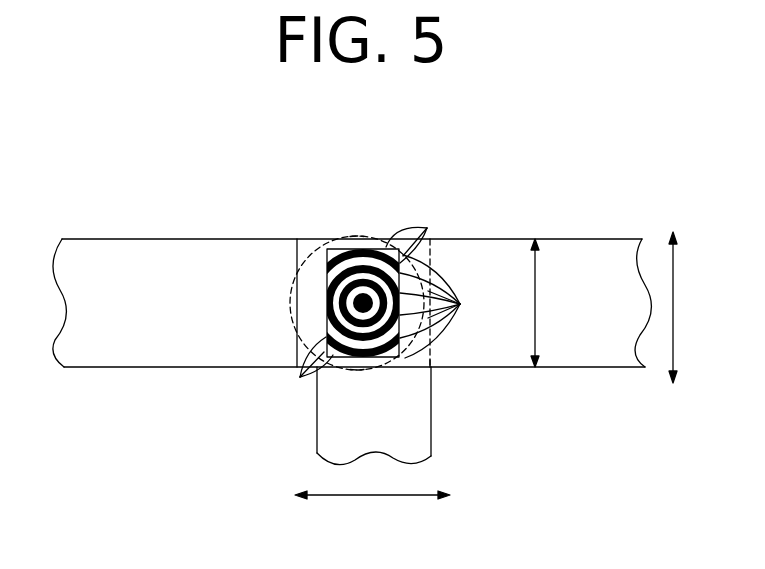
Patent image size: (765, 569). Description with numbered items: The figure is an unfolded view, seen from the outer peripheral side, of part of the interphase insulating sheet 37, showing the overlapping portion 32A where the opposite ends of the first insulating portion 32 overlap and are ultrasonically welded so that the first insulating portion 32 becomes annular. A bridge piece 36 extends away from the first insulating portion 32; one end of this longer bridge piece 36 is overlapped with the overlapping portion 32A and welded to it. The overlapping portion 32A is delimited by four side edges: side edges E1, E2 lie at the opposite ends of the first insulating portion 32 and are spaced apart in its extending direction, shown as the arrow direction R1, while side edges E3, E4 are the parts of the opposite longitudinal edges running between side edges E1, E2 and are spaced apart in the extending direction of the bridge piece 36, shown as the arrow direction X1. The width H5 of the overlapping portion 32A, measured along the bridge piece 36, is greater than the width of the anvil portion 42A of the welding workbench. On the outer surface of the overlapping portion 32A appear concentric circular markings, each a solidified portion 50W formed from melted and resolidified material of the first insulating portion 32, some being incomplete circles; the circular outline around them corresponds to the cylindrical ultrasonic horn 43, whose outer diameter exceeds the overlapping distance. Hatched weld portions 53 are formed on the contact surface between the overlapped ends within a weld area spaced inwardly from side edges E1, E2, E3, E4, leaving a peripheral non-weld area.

The first insulating portion 32 is at (171, 247).
The overlapping portion 32A is at (418, 363).
The bridge piece 36 is at (432, 432).
The interphase insulating sheet 37 is at (541, 219).
The anvil portion 42A is at (326, 330).
The ultrasonic horn 43 is at (313, 238).
The solidified portion 50W is at (459, 306).
The weld portion 53 is at (427, 228).
The side edge E1 is at (432, 263).
The side edge E2 is at (297, 258).
The side edge E3 is at (366, 373).
The side edge E4 is at (363, 236).
The width of overlapping portion H5 is at (538, 305).
The arrow direction X1 is at (676, 308).
The arrow direction R1 is at (371, 498).